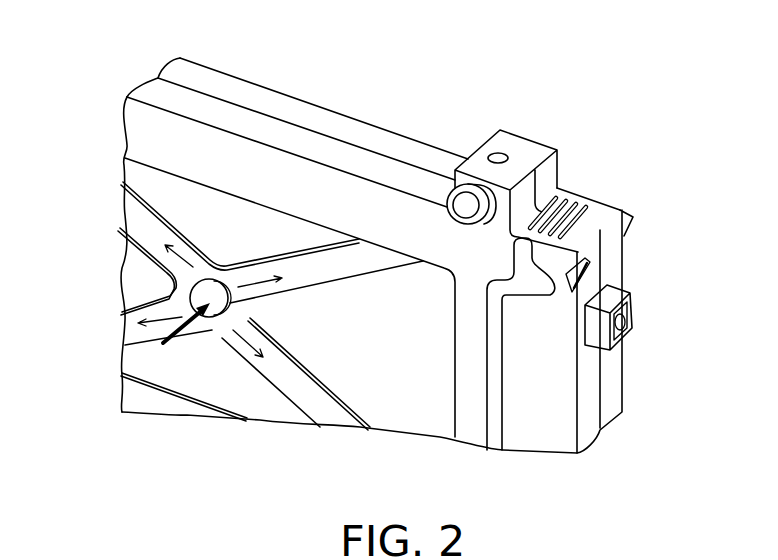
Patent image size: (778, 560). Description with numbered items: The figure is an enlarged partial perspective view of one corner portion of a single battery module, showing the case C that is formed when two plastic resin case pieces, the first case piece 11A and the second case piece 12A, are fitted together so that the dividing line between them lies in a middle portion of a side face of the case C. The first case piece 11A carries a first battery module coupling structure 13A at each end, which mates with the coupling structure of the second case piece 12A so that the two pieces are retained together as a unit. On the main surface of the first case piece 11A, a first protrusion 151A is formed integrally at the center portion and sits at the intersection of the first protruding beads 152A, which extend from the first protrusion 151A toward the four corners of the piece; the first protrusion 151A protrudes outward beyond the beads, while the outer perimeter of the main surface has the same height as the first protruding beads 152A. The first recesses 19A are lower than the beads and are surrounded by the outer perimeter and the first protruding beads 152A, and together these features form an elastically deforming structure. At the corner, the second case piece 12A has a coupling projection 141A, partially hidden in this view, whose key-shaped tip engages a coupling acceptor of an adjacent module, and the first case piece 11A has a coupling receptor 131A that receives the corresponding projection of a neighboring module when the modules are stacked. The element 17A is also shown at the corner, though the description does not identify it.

The case C is at (349, 54).
The first case piece 11A is at (217, 115).
The second case piece 12A is at (288, 107).
The second coupling projection 141A is at (634, 221).
The first battery module coupling structure 13A is at (712, 234).
The coupling receptor 131A is at (538, 287).
The connector block 17A is at (493, 327).
The first recess 19A is at (140, 272).
The first protrusion 151A is at (218, 318).
The first protruding bead 152A is at (333, 420).